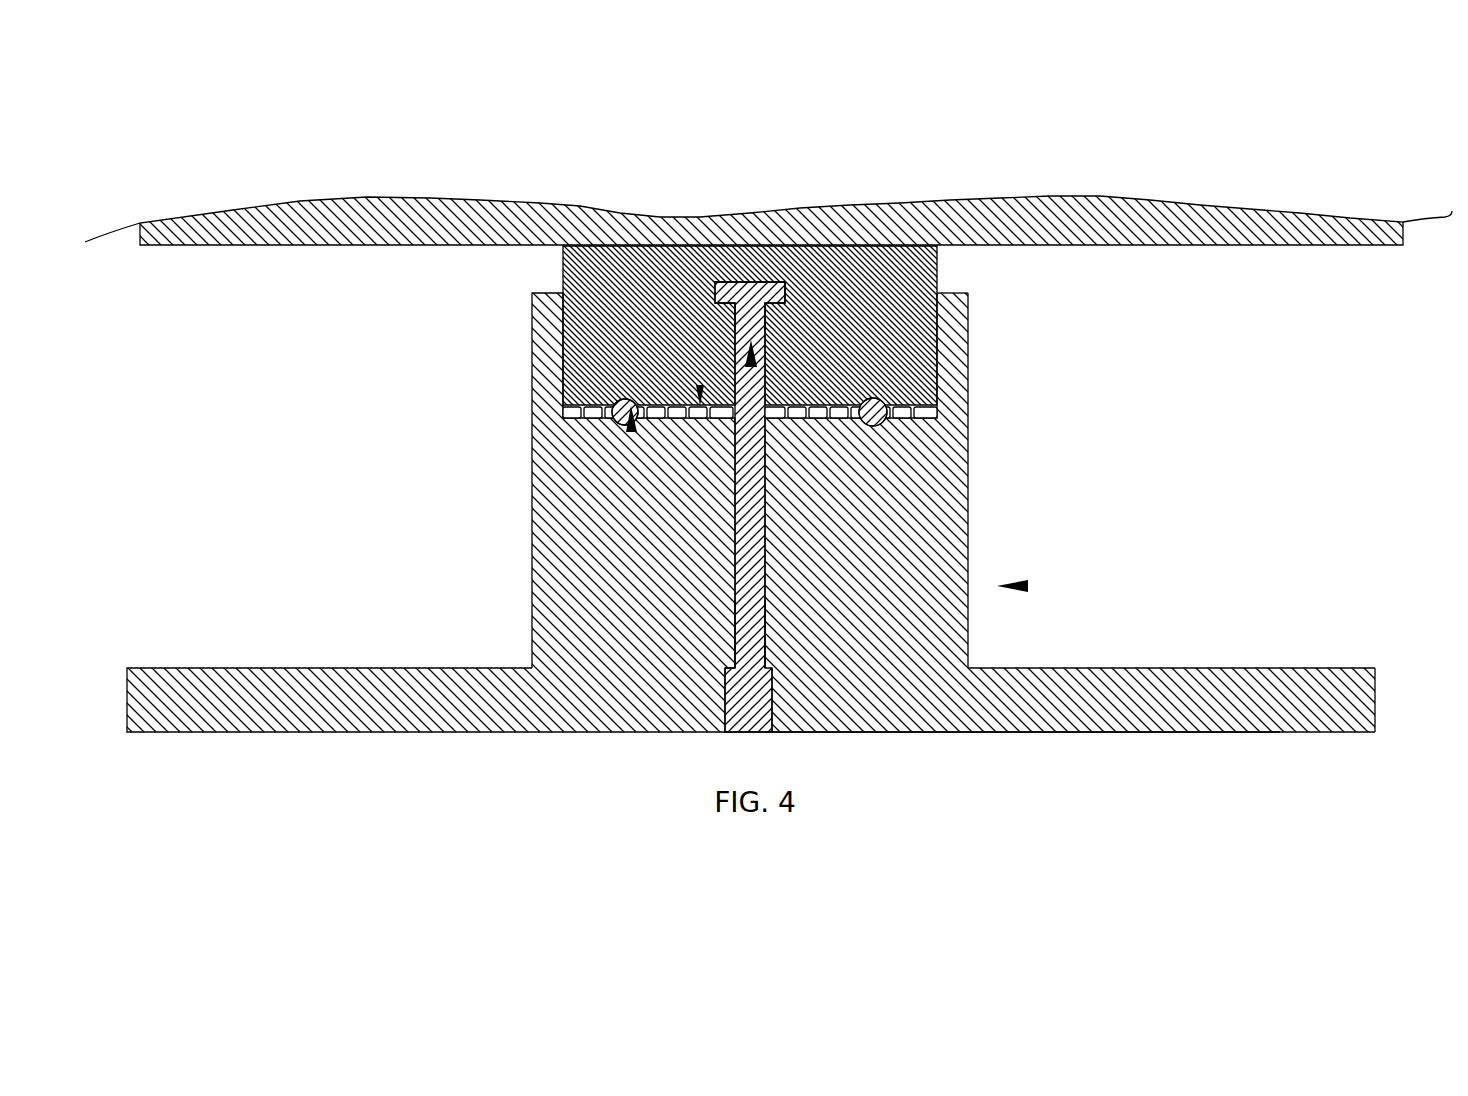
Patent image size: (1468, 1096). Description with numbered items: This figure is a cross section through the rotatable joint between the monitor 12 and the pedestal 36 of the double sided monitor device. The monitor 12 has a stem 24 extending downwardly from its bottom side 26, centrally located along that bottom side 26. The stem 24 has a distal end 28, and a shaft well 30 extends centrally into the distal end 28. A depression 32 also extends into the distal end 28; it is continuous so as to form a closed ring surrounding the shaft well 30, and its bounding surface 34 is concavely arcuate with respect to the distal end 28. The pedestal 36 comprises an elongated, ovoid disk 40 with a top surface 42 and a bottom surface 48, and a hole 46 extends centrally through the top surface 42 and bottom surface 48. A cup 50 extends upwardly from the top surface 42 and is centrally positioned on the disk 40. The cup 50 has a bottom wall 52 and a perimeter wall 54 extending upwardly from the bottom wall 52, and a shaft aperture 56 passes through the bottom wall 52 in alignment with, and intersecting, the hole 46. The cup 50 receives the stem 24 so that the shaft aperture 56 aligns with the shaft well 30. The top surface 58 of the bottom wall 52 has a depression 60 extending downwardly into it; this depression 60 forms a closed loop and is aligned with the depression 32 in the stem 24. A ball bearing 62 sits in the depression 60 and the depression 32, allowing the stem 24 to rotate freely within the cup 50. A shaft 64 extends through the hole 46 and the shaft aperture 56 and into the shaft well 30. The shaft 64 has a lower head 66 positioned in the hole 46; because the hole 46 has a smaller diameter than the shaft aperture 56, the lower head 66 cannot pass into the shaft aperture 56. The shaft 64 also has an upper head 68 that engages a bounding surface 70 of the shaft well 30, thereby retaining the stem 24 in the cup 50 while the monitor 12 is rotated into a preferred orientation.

The monitor 12 is at (209, 290).
The stem 24 is at (680, 405).
The bottom side 26 is at (358, 248).
The distal end 28 is at (578, 418).
The shaft well 30 is at (752, 366).
The depression 32 is at (612, 423).
The bounding surface 34 is at (631, 430).
The pedestal 36 is at (1028, 586).
The disk 40 is at (1375, 667).
The top surface 42 is at (1228, 667).
The hole 46 is at (1375, 705).
The bottom surface 48 is at (1280, 733).
The cup 50 is at (968, 503).
The bottom wall 52 is at (563, 293).
The perimeter wall 54 is at (968, 328).
The shaft aperture 56 is at (733, 632).
The top surface 58 is at (700, 390).
The depression 60 is at (887, 412).
The ball bearing 62 is at (948, 300).
The shaft 64 is at (747, 557).
The lower head 66 is at (725, 667).
The upper head 68 is at (787, 291).
The bounding surface 70 is at (745, 330).